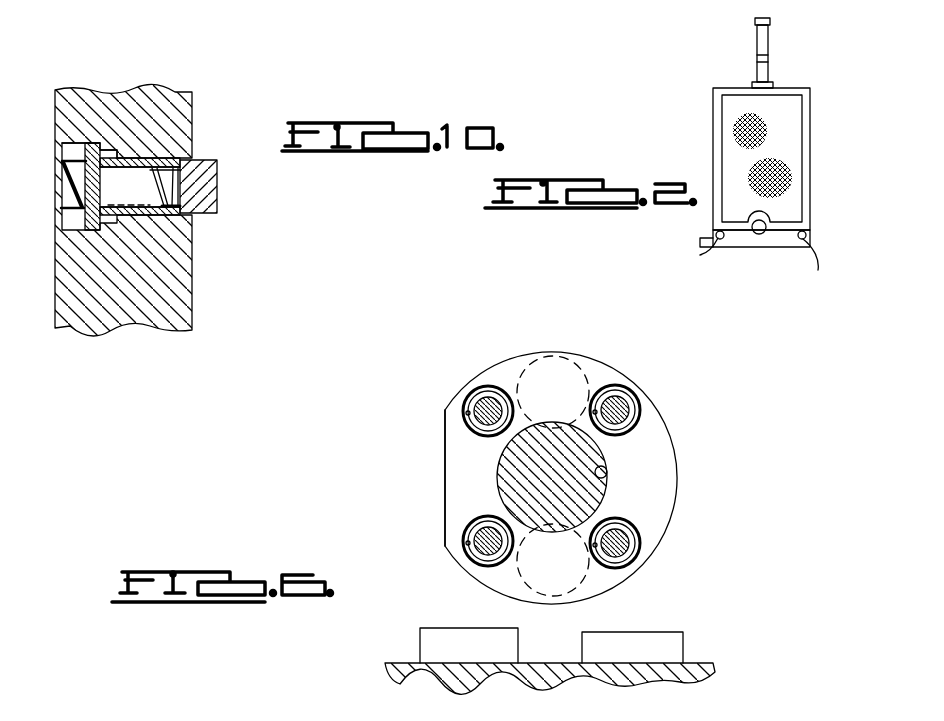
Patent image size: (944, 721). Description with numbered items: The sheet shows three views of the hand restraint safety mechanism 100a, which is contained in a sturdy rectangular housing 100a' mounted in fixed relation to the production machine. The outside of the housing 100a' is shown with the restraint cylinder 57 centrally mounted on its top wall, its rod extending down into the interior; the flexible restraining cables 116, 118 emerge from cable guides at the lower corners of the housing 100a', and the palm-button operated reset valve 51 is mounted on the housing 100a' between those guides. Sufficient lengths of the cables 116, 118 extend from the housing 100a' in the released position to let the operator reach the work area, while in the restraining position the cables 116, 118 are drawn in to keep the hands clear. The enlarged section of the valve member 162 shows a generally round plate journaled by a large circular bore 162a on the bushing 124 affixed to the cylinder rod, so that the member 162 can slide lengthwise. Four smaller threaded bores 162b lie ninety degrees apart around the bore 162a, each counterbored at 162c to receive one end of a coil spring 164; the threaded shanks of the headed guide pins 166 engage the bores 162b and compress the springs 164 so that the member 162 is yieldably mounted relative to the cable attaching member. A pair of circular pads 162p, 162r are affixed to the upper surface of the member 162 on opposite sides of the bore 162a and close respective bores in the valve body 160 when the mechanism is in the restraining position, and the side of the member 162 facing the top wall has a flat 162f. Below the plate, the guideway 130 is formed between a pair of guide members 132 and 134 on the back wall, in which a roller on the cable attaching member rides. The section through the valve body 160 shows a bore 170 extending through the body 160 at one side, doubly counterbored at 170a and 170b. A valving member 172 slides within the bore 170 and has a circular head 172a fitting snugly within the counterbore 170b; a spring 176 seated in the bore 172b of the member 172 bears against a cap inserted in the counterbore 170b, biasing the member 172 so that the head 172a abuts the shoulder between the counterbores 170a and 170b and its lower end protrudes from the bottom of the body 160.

In FIG. 10, the valve body 160 is at (192, 313).
In FIG. 10, the bore 170 is at (197, 137).
In FIG. 10, the counterbore 170a is at (113, 150).
In FIG. 10, the counterbore 170b is at (77, 143).
In FIG. 10, the valving member 172 is at (213, 157).
In FIG. 10, the circular head 172a is at (97, 143).
In FIG. 10, the bore 172b is at (152, 201).
In FIG. 10, the spring 176 is at (165, 167).
In FIG. 10, the bushing 124 is at (55, 148).
In FIG. 6, the bushing 124 is at (535, 440).
In FIG. 2, the hand restraint safety mechanism 100a is at (723, 142).
In FIG. 2, the housing 100a' is at (828, 66).
In FIG. 2, the restraint cylinder 57 is at (768, 45).
In FIG. 2, the reset valve 51 is at (759, 235).
In FIG. 2, the flexible restraining cable 118 is at (700, 255).
In FIG. 2, the flexible restraining cable 116 is at (818, 270).
In FIG. 6, the valve member 162 is at (630, 375).
In FIG. 6, the circular bore 162a is at (607, 472).
In FIG. 6, the threaded bores 162b is at (636, 407).
In FIG. 6, the counterbore 162c is at (630, 385).
In FIG. 6, the flat 162f is at (445, 460).
In FIG. 6, the circular pad 162p is at (603, 340).
In FIG. 6, the circular pad 162r is at (570, 588).
In FIG. 6, the coil spring 164 is at (492, 386).
In FIG. 6, the headed guide pins 166 is at (613, 395).
In FIG. 6, the guideway 130 is at (573, 648).
In FIG. 6, the guide member 132 is at (679, 644).
In FIG. 6, the guide member 134 is at (437, 644).